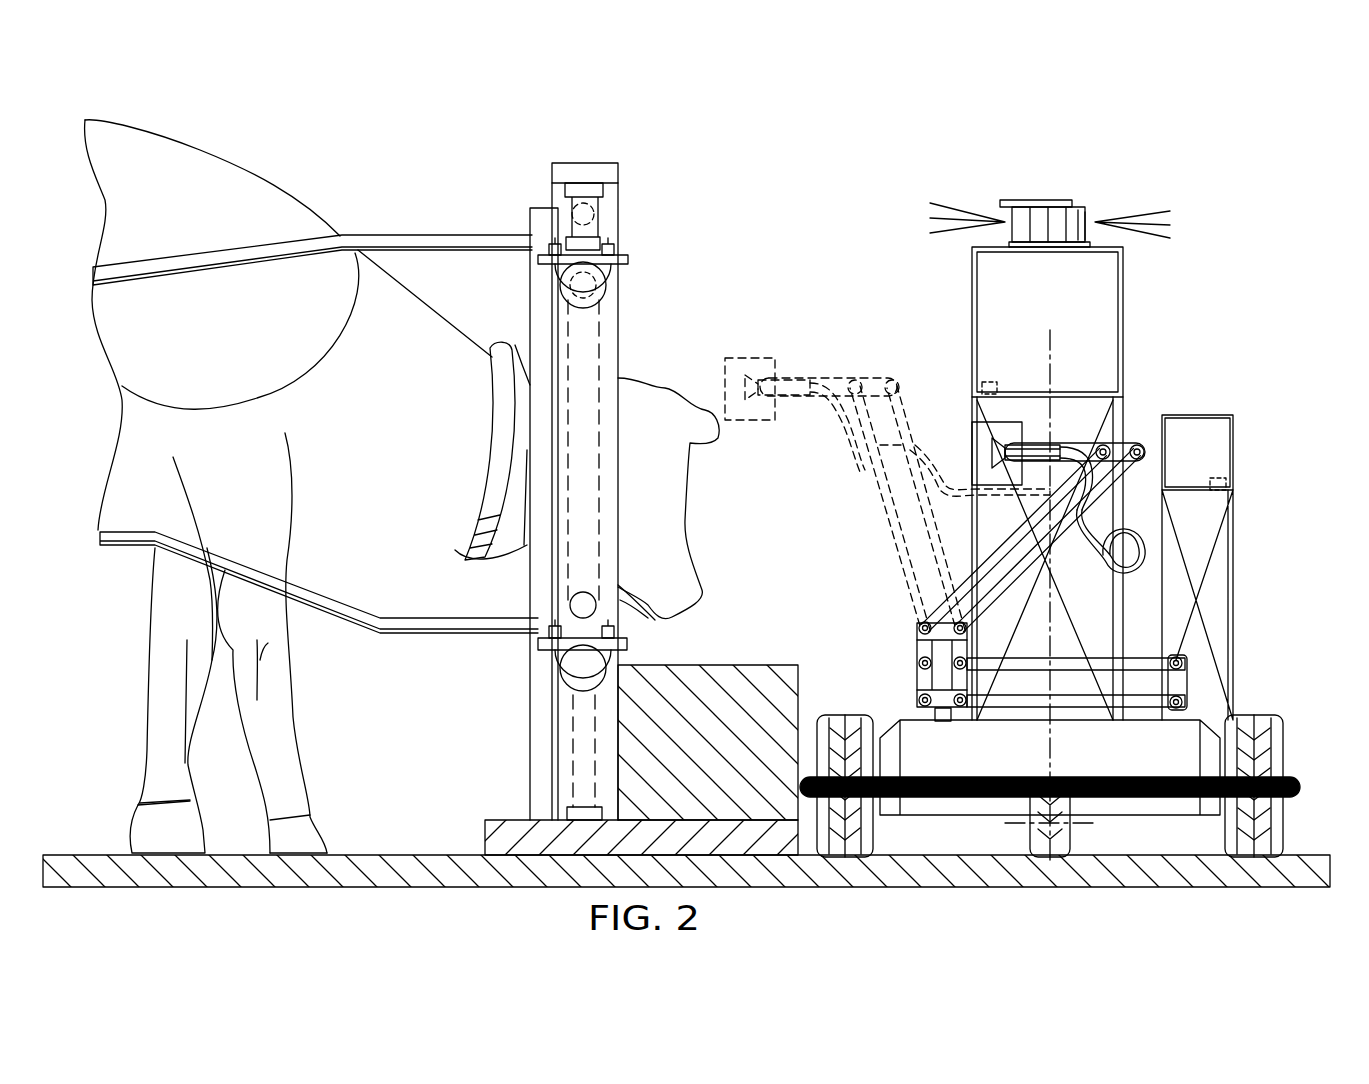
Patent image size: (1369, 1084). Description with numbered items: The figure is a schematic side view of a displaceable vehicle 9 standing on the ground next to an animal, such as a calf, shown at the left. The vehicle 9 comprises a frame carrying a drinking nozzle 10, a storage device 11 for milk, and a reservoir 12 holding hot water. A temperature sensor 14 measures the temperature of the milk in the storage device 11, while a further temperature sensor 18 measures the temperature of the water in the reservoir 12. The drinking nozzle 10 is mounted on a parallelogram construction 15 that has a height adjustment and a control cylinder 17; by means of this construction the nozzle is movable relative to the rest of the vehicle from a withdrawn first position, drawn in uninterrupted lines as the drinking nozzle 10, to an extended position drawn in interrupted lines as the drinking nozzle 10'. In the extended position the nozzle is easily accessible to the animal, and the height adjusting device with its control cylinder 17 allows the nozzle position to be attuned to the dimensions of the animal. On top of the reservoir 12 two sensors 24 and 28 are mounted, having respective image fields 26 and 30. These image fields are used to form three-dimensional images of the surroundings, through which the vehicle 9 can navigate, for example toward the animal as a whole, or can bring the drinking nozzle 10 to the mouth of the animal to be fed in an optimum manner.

The vehicle 9 is at (1247, 705).
The drinking nozzle 10 is at (1029, 487).
The drinking nozzle in extended position 10' is at (875, 464).
The storage device 11 is at (1225, 430).
The reservoir 12 is at (1088, 280).
The temperature sensor 14 is at (1218, 483).
The parallelogram construction 15 is at (1017, 538).
The control cylinder 17 is at (943, 715).
The temperature sensor 18 is at (989, 388).
The sensor 24 is at (1010, 225).
The image field 26 is at (1003, 222).
The sensor 28 is at (1078, 230).
The image field 30 is at (1141, 222).